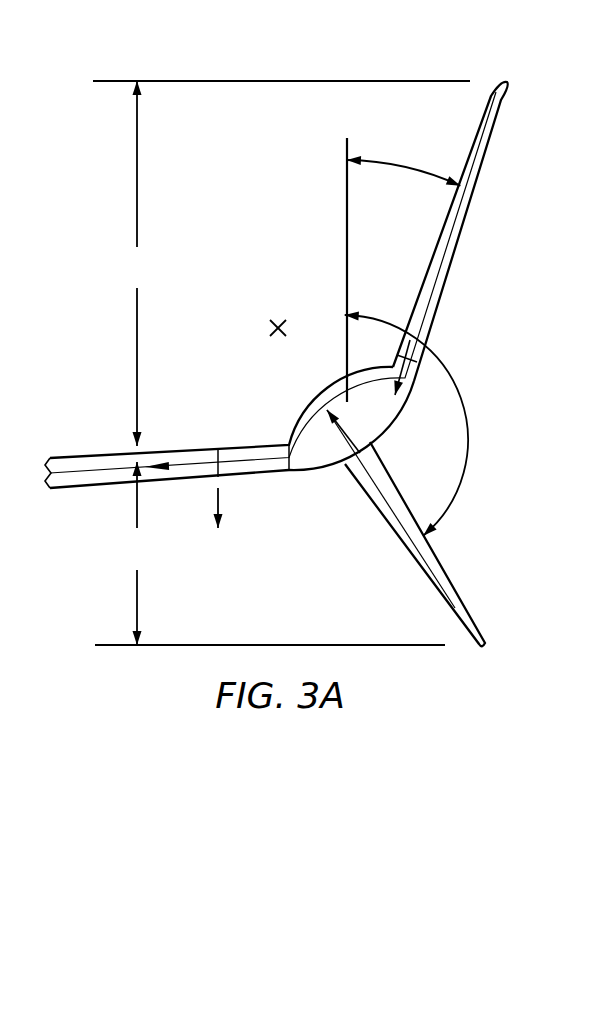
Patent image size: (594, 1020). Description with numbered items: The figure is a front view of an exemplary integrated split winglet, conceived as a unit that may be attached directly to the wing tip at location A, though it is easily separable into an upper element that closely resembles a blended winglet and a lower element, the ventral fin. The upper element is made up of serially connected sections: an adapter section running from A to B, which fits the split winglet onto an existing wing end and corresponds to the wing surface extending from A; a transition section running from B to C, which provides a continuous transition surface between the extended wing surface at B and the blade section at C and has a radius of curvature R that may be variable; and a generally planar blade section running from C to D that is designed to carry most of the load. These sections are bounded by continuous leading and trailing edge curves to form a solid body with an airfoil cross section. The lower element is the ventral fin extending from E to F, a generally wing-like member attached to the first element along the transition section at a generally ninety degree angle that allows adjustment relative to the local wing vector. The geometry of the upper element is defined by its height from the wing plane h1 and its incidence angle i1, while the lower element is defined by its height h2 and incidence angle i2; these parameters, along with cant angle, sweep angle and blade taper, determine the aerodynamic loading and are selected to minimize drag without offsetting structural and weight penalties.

The wing tip attachment location A is at (217, 451).
The extended wing surface end point B is at (287, 444).
The blade section start point C is at (396, 351).
The blade section tip D is at (455, 217).
The ventral fin root E is at (331, 479).
The ventral fin tip F is at (406, 532).
The radius of curvature R is at (310, 443).
The upper element height h1 is at (281, 263).
The lower element height h2 is at (270, 553).
The upper element incidence angle i1 is at (411, 375).
The lower element incidence angle i2 is at (331, 410).